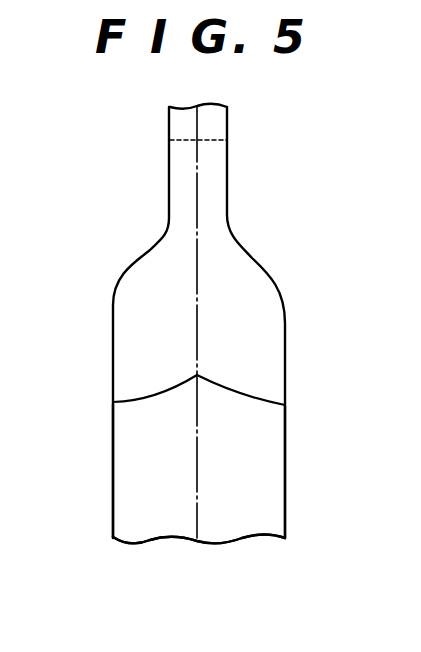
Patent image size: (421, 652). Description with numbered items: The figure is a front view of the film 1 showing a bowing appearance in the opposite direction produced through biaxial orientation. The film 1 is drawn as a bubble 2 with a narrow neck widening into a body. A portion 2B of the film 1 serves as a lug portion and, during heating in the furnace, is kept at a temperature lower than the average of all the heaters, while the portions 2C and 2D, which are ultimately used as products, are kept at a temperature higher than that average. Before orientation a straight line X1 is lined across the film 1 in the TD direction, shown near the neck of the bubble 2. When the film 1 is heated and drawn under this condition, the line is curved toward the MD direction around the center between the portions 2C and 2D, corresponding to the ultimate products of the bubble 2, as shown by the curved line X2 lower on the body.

The film 1 is at (227, 186).
The bubble 2 is at (270, 500).
The portion serving as lug portion 2B is at (197, 304).
The portion ultimately used as product 2C is at (113, 487).
The portion ultimately used as product 2D is at (286, 462).
The straight line X1 is at (203, 140).
The curved line X2 is at (260, 402).